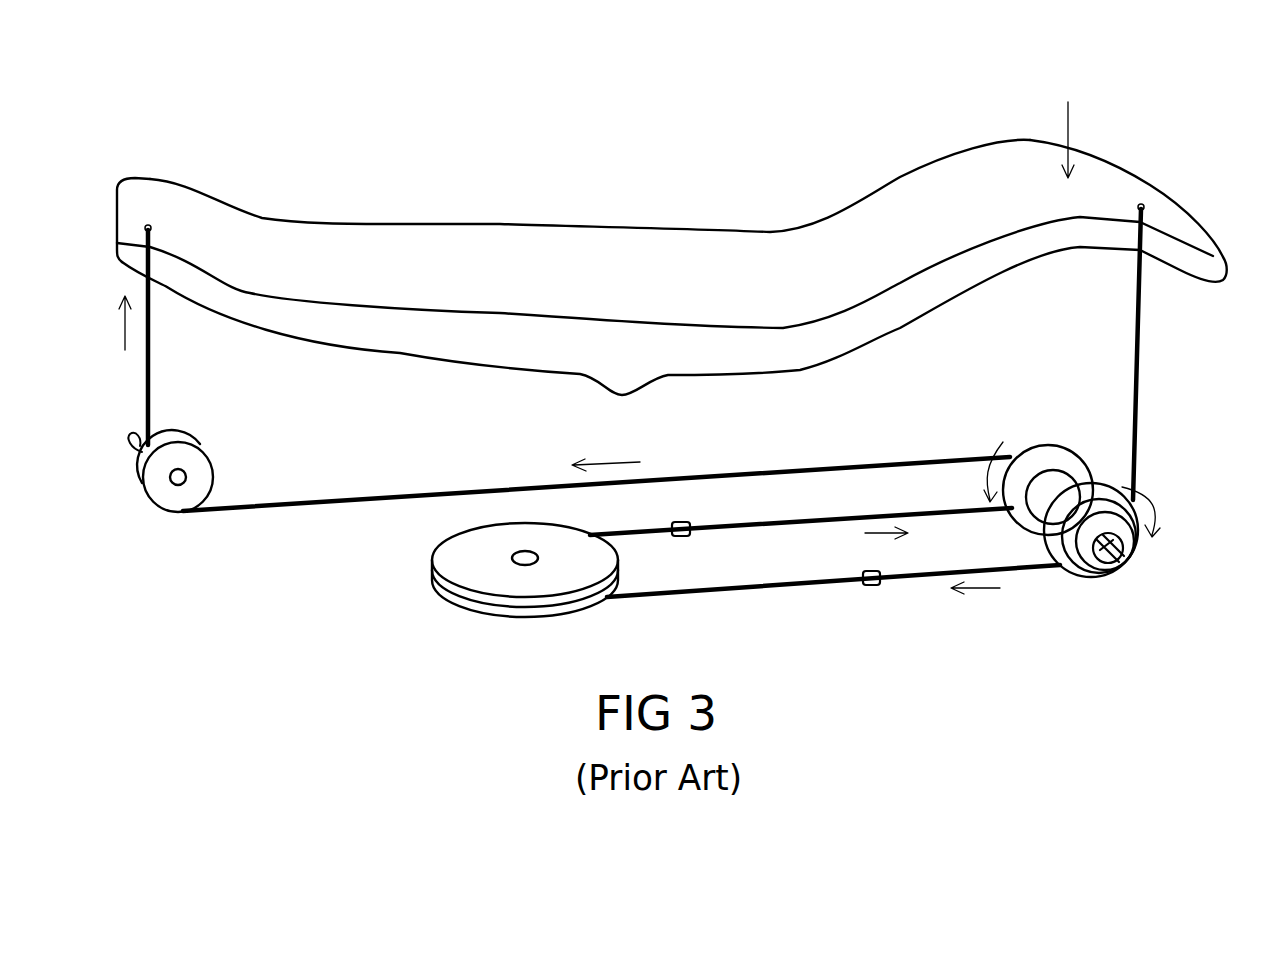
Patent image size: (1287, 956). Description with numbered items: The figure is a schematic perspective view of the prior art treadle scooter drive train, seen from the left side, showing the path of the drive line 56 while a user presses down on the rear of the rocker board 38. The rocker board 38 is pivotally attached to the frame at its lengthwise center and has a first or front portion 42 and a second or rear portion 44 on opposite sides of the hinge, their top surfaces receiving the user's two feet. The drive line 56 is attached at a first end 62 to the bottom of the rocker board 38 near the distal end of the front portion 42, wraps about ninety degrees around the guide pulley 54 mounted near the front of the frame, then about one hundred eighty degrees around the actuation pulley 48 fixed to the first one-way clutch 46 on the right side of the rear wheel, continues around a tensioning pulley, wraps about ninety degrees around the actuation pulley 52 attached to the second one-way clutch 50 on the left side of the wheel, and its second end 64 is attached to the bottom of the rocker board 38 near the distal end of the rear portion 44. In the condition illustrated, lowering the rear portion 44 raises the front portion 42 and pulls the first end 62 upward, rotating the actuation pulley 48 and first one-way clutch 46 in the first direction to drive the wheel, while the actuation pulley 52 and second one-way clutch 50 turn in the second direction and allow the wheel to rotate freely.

The rocker board 38 is at (683, 245).
The first or front portion of the rocker board 42 is at (150, 200).
The second or rear portion of the rocker board 44 is at (1110, 178).
The first one-way clutch 46 is at (1065, 450).
The actuation pulley 48 is at (1015, 448).
The second one-way clutch 50 is at (1122, 494).
The actuation pulley 52 is at (1125, 540).
The guide pulley 54 is at (191, 462).
The drive line 56 is at (298, 498).
The first end of the drive line 62 is at (142, 236).
The second end of the drive line 64 is at (1148, 214).